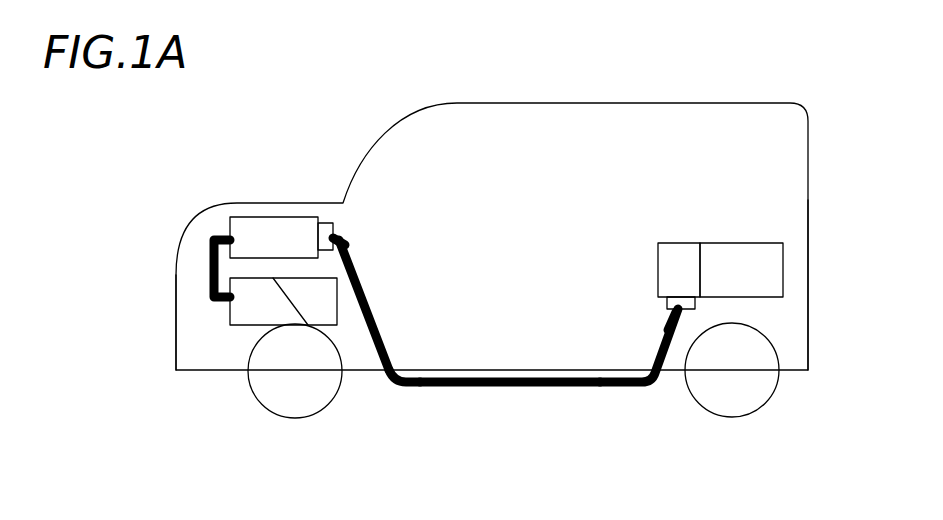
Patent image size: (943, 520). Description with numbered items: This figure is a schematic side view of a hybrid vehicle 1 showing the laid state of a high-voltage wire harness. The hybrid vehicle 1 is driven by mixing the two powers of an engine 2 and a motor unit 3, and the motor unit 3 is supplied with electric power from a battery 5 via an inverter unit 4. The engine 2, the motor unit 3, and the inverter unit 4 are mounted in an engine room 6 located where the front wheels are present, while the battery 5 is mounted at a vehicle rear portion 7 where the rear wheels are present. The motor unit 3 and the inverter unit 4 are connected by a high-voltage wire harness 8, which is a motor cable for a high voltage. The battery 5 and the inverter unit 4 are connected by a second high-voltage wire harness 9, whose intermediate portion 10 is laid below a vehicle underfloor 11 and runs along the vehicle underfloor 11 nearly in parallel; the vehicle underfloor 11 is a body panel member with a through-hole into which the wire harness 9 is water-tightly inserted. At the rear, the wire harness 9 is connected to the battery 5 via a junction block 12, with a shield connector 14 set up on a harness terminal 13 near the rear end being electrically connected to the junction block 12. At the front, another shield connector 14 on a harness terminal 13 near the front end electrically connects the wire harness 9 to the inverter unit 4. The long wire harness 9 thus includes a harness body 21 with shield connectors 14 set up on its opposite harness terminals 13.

The hybrid vehicle 1 is at (544, 93).
The engine 2 is at (330, 322).
The motor unit 3 is at (242, 312).
The inverter unit 4 is at (253, 232).
The battery 5 is at (748, 255).
The engine room 6 is at (193, 344).
The vehicle rear portion 7 is at (790, 340).
The high-voltage wire harness 8 is at (212, 276).
The high-voltage wire harness 9 is at (425, 388).
The intermediate portion 10 is at (536, 389).
The vehicle underfloor 11 is at (598, 389).
The junction block 12 is at (680, 255).
The harness terminal 13 is at (355, 244).
The shield connector 14 is at (336, 232).
The harness body 21 is at (383, 325).